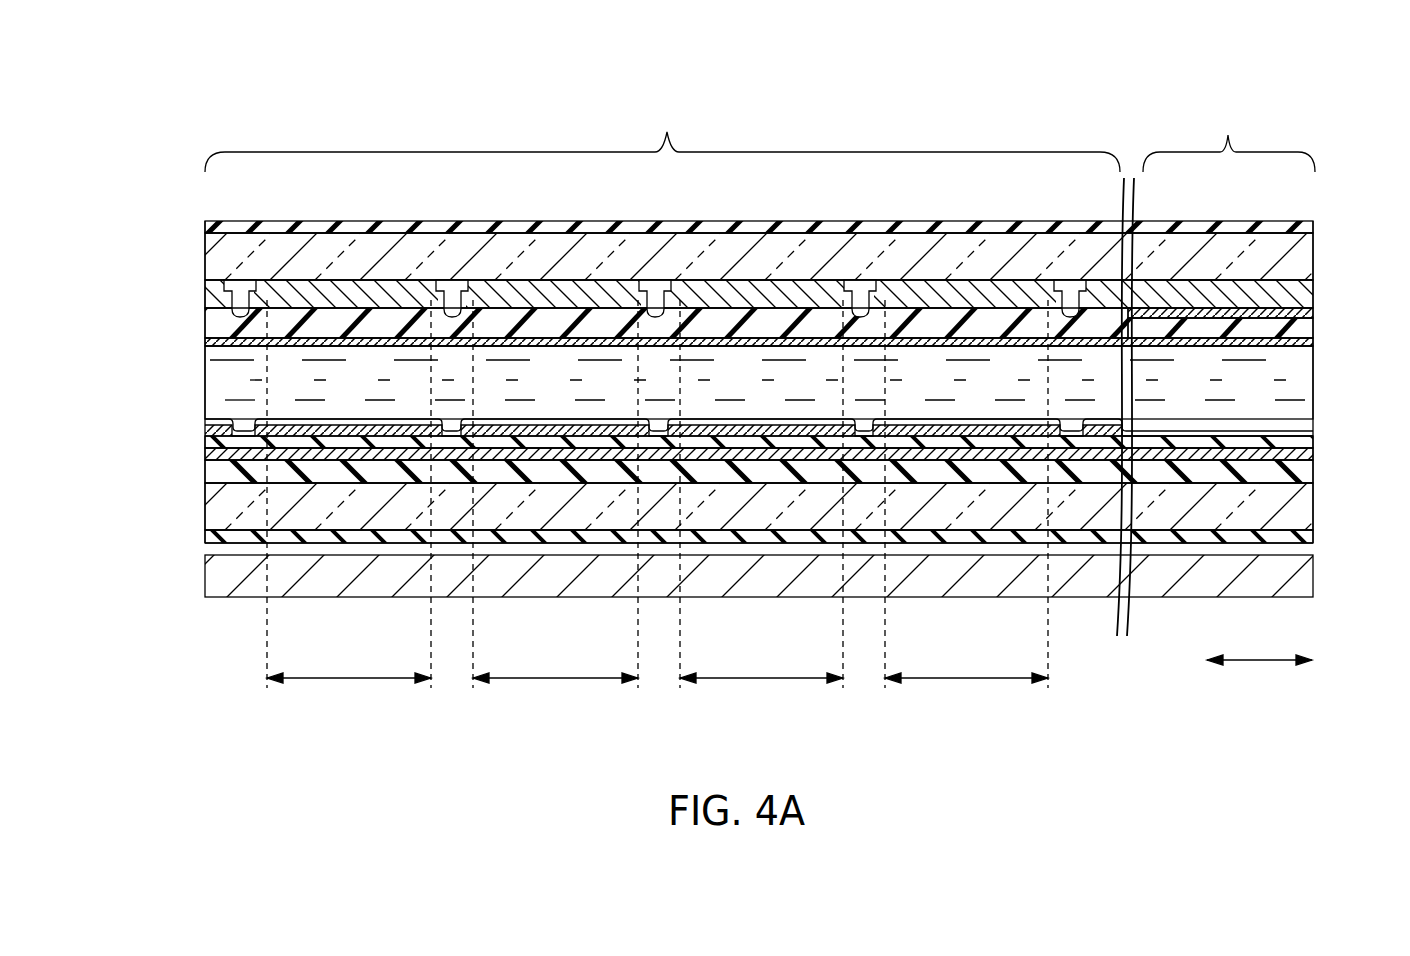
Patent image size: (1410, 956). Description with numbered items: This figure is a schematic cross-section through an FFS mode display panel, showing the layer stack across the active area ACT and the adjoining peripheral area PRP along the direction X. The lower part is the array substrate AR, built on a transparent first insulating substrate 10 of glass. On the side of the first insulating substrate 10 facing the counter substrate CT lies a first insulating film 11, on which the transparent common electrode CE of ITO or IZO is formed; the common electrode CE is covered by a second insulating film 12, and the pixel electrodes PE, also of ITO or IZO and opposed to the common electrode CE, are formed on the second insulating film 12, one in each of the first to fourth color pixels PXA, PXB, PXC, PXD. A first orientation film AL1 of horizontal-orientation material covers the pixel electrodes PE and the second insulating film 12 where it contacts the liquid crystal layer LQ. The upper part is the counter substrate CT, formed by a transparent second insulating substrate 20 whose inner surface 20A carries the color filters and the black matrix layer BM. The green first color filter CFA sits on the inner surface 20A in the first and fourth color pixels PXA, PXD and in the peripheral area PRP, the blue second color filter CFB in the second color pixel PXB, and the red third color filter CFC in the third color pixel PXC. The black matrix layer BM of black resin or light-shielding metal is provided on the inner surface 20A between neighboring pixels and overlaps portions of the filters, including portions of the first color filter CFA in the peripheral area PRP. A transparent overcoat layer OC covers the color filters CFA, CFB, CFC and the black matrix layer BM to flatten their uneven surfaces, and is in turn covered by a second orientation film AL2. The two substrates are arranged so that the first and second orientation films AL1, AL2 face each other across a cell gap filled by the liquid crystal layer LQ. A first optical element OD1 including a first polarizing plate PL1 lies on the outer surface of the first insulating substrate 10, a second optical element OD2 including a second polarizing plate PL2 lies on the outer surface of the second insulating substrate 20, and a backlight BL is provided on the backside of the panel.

The second optical element OD2 is at (702, 202).
The second polarizing plate PL2 is at (210, 228).
The second insulating substrate 20 is at (215, 260).
The inner surface 20A is at (743, 251).
The overcoat layer OC is at (215, 323).
The second orientation film AL2 is at (212, 342).
The first orientation film AL1 is at (215, 419).
The second insulating film 12 is at (215, 442).
The common electrode CE is at (215, 455).
The first insulating film 11 is at (215, 472).
The first insulating substrate 10 is at (215, 508).
The first optical element OD1 is at (702, 559).
The first polarizing plate PL1 is at (212, 538).
The backlight BL is at (212, 582).
The black matrix layer BM is at (240, 282).
The first color filter CFA is at (344, 295).
The second color filter CFB is at (552, 295).
The third color filter CFC is at (760, 295).
The counter substrate CT is at (1322, 287).
The array substrate AR is at (1322, 468).
The liquid crystal layer LQ is at (1300, 388).
The pixel electrode PE is at (357, 434).
The first color pixel PXA is at (349, 691).
The second color pixel PXB is at (555, 691).
The third color pixel PXC is at (761, 691).
The fourth color pixel PXD is at (966, 691).
The active area ACT is at (662, 139).
The peripheral area PRP is at (1229, 139).
The first direction X is at (1259, 675).